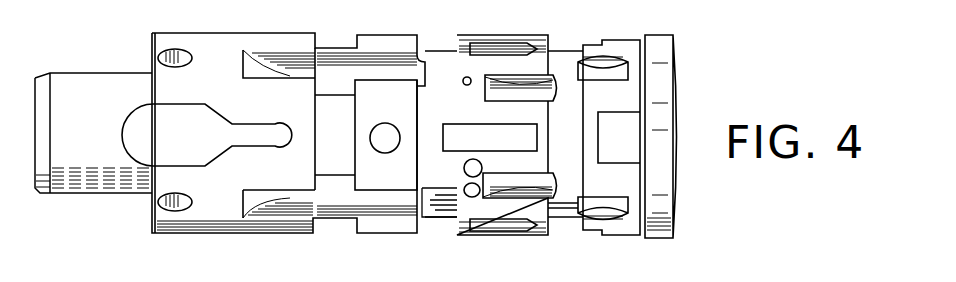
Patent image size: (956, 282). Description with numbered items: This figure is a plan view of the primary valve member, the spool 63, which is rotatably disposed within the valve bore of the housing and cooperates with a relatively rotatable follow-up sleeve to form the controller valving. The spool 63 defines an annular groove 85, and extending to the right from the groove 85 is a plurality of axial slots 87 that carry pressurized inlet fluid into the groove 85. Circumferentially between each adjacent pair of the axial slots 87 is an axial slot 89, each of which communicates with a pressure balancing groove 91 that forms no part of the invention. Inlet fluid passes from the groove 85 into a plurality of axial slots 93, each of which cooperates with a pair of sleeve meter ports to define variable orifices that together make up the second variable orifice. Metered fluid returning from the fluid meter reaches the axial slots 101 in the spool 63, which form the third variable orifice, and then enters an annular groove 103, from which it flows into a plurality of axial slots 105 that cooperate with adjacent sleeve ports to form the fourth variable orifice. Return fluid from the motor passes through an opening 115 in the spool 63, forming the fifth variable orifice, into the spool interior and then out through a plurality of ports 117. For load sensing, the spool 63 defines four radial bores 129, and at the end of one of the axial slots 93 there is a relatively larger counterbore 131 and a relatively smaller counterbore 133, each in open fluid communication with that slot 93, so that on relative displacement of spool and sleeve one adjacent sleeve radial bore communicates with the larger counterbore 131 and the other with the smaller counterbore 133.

The primary valve member (spool) 63 is at (122, 15).
The axial slot 105 is at (277, 72).
The port 117 is at (192, 87).
The opening 115 is at (297, 136).
The annular groove 85 is at (568, 50).
The annular groove 103 is at (442, 203).
The axial slot 101 is at (455, 141).
The axial slot 93 is at (517, 93).
The radial bore 129 is at (480, 108).
The larger counterbore 131 is at (477, 160).
The smaller counterbore 133 is at (464, 191).
The axial slot 89 is at (618, 40).
The axial slot 87 is at (617, 70).
The pressure balancing groove 91 is at (647, 97).